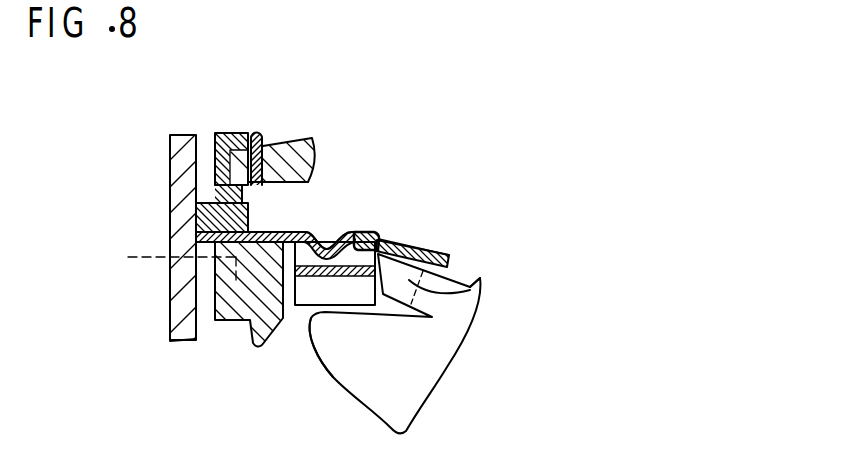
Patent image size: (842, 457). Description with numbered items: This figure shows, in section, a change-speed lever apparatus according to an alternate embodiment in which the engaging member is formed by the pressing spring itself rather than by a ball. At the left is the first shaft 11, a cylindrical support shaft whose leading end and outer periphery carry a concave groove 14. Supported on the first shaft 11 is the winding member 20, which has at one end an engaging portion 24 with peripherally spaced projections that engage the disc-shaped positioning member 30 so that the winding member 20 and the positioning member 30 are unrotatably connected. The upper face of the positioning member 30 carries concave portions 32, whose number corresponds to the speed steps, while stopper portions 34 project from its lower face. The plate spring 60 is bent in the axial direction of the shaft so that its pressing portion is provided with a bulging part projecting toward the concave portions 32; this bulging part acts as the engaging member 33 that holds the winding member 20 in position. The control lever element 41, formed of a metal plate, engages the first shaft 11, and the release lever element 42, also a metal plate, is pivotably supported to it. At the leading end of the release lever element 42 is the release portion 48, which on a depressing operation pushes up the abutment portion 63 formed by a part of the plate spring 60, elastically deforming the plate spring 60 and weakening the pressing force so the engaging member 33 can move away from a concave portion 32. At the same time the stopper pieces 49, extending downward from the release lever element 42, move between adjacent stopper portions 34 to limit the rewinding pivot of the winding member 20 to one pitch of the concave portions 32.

The first shaft 11 is at (169, 214).
The concave groove 14 is at (215, 317).
The winding member 20 is at (248, 340).
The engaging portion 24 is at (162, 261).
The positioning member 30 is at (289, 233).
The concave portions 32 is at (318, 236).
The engaging member 33 is at (340, 238).
The stopper portions 34 is at (306, 298).
The control lever element 41 is at (286, 146).
The release lever element 42 is at (428, 368).
The release portion 48 is at (480, 295).
The stopper pieces 49 is at (333, 338).
The plate spring 60 is at (383, 231).
The abutment portion 63 is at (438, 252).